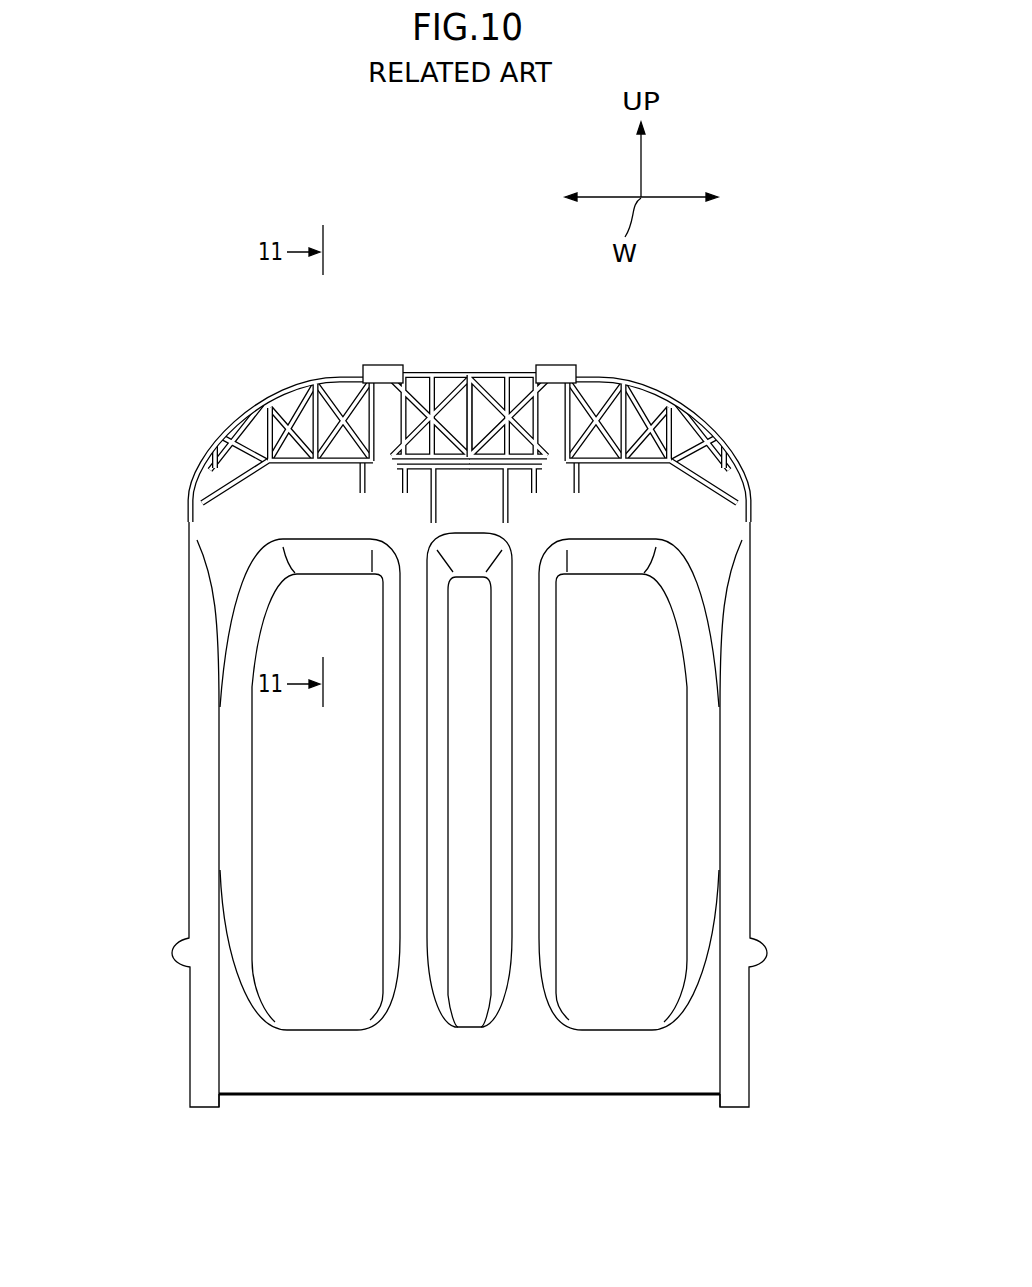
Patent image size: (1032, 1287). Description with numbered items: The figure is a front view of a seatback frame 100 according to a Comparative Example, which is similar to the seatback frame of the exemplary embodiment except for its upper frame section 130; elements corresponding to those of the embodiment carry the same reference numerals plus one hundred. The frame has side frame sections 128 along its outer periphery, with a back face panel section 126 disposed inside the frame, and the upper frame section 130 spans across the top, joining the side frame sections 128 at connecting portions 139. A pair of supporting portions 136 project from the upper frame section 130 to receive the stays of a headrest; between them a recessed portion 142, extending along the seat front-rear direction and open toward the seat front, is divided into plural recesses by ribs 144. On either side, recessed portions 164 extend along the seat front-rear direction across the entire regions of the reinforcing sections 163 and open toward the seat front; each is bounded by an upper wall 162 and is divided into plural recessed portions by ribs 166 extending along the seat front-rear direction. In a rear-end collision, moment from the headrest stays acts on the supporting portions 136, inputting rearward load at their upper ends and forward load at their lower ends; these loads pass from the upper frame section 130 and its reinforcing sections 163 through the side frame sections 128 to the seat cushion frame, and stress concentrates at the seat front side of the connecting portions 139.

The seatback frame 100 is at (231, 286).
The back face panel section 126 is at (453, 1075).
The side frame sections 128 is at (187, 772).
The upper frame section 130 is at (458, 372).
The supporting portions 136 is at (385, 365).
The connecting portions 139 is at (198, 523).
The recessed portion 142 is at (493, 448).
The ribs 144 is at (427, 448).
The upper wall 162 is at (342, 378).
The reinforcing sections 163 is at (210, 440).
The recessed portions 164 is at (297, 383).
The ribs 166 is at (247, 410).